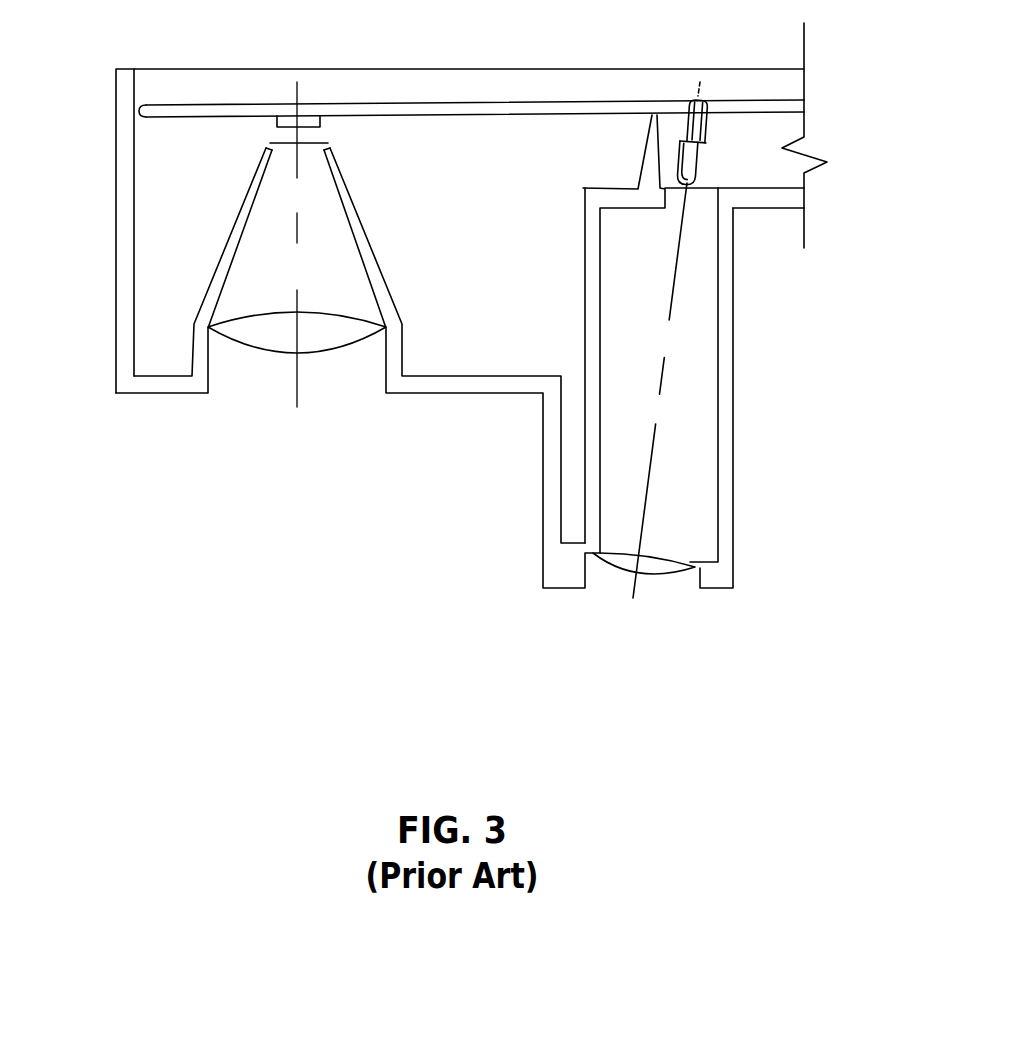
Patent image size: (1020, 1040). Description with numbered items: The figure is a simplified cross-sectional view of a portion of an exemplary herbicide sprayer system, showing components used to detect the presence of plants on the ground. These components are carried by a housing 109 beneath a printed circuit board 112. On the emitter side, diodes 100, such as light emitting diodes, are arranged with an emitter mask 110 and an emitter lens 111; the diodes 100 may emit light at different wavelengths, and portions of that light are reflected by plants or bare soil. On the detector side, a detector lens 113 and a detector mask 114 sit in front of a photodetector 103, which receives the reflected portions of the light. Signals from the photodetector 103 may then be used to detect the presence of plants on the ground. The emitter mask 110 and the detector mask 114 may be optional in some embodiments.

The diodes 100 is at (700, 160).
The photodetector 103 is at (287, 115).
The housing 109 is at (117, 150).
The emitter mask 110 is at (692, 185).
The emitter lens 111 is at (662, 575).
The printed circuit board 112 is at (468, 103).
The detector lens 113 is at (265, 352).
The detector mask 114 is at (330, 145).